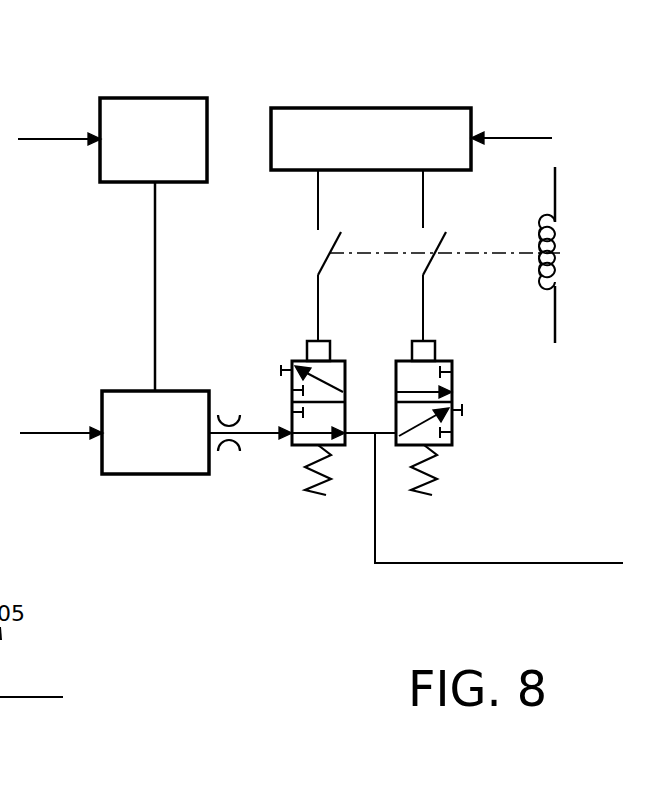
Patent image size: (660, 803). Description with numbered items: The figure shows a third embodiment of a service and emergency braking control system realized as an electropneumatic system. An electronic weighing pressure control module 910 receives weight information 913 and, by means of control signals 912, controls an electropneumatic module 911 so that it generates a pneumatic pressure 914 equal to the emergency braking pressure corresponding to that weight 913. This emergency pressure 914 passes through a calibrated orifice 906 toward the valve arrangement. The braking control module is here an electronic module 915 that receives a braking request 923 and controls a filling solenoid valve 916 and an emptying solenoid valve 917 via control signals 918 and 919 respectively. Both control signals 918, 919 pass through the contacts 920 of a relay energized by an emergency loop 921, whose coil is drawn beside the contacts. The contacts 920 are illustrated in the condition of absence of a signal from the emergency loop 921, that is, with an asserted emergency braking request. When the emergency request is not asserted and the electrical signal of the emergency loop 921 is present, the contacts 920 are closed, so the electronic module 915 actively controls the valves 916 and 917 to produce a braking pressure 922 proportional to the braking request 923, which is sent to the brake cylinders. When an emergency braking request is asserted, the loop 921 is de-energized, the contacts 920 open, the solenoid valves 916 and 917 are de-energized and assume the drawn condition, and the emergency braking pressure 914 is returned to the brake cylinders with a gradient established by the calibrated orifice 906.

The electronic weighing pressure control module 910 is at (156, 98).
The electropneumatic module 911 is at (172, 476).
The control signals 912 is at (154, 272).
The weight information 913 is at (34, 138).
The pneumatic pressure 914 is at (255, 430).
The electronic module 915 is at (414, 108).
The filling solenoid valve 916 is at (300, 358).
The emptying solenoid valve 917 is at (453, 357).
The control signal 918 is at (318, 318).
The control signal 919 is at (423, 318).
The contacts 920 is at (440, 245).
The emergency loop 921 is at (560, 255).
The braking pressure 922 is at (565, 563).
The braking request 923 is at (529, 138).
The calibrated orifice 906 is at (230, 448).